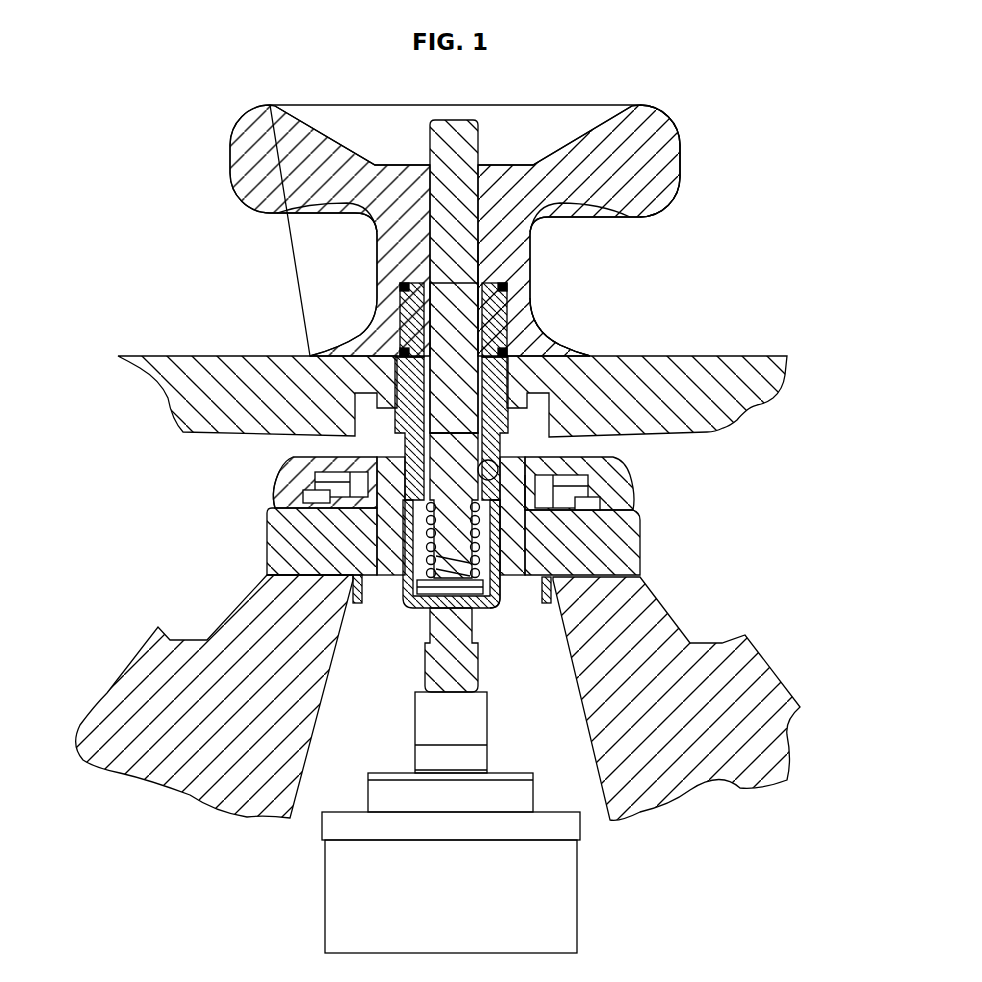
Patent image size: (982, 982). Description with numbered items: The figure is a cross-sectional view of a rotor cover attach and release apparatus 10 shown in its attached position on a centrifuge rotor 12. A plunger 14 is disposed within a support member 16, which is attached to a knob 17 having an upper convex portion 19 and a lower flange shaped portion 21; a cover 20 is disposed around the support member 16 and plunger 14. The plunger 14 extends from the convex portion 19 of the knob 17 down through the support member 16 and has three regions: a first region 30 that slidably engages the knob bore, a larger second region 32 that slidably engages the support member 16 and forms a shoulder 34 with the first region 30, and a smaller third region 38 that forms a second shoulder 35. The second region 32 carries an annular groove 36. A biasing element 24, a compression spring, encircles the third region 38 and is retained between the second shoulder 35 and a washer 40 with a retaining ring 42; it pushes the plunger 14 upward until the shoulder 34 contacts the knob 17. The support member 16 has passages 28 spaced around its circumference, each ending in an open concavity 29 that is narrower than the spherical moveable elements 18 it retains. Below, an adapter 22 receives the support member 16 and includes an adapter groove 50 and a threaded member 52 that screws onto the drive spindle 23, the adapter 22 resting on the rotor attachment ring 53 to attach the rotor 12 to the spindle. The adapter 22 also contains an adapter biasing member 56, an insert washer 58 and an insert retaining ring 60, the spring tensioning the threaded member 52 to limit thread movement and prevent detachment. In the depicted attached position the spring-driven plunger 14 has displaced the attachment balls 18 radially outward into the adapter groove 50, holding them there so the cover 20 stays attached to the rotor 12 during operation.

The rotor cover attach and release apparatus 10 is at (705, 167).
The rotor 12 is at (135, 662).
The plunger 14 is at (428, 138).
The support member 16 is at (520, 305).
The knob 17 is at (660, 112).
The moveable elements 18 is at (454, 505).
The upper convex portion 19 is at (543, 130).
The cover 20 is at (748, 372).
The lower flange shaped portion 21 is at (557, 345).
The adapter 22 is at (632, 478).
The drive spindle 23 is at (460, 722).
The biasing element 24 is at (495, 585).
The passages 28 is at (500, 470).
The open concavity 29 is at (520, 485).
The first region 30 is at (442, 177).
The second region 32 is at (442, 319).
The shoulder 34 is at (485, 272).
The second shoulder 35 is at (545, 535).
The annular groove 36 is at (400, 440).
The third region 38 is at (410, 606).
The washer 40 is at (478, 595).
The retaining ring 42 is at (472, 600).
The adapter groove 50 is at (498, 478).
The threaded member 52 is at (458, 676).
The rotor attachment ring 53 is at (270, 545).
The adapter biasing member 56 is at (316, 492).
The insert washer 58 is at (340, 462).
The insert retaining ring 60 is at (272, 511).